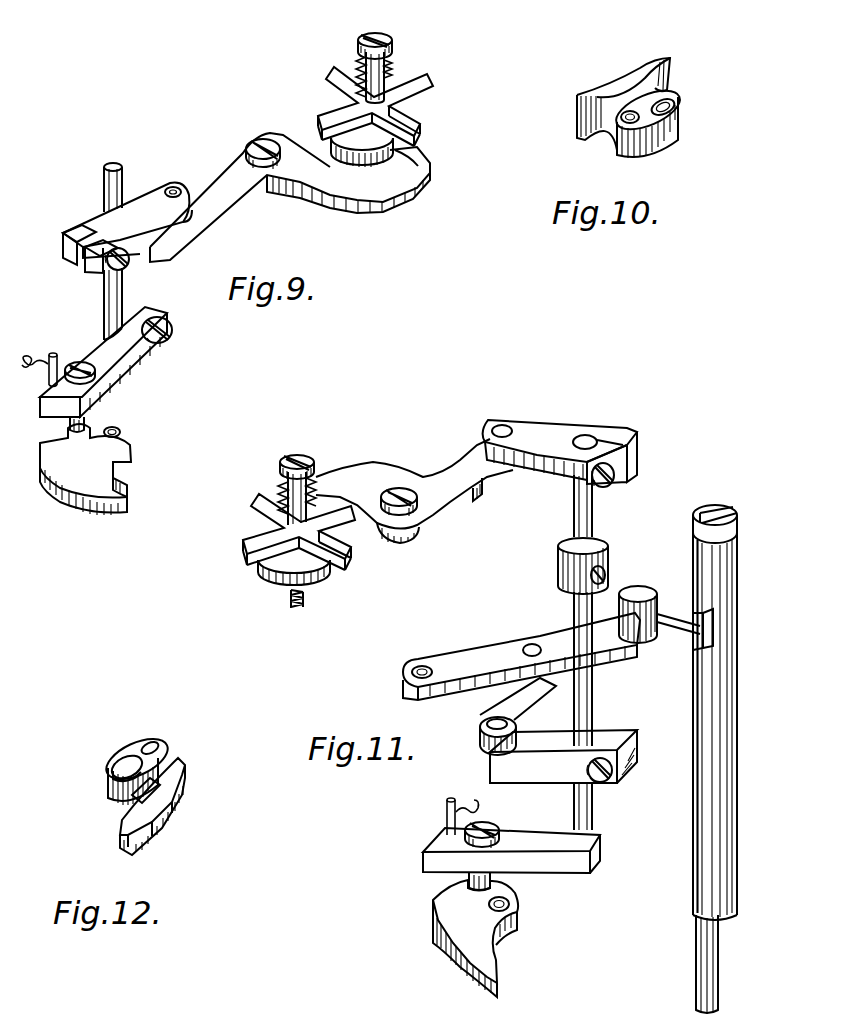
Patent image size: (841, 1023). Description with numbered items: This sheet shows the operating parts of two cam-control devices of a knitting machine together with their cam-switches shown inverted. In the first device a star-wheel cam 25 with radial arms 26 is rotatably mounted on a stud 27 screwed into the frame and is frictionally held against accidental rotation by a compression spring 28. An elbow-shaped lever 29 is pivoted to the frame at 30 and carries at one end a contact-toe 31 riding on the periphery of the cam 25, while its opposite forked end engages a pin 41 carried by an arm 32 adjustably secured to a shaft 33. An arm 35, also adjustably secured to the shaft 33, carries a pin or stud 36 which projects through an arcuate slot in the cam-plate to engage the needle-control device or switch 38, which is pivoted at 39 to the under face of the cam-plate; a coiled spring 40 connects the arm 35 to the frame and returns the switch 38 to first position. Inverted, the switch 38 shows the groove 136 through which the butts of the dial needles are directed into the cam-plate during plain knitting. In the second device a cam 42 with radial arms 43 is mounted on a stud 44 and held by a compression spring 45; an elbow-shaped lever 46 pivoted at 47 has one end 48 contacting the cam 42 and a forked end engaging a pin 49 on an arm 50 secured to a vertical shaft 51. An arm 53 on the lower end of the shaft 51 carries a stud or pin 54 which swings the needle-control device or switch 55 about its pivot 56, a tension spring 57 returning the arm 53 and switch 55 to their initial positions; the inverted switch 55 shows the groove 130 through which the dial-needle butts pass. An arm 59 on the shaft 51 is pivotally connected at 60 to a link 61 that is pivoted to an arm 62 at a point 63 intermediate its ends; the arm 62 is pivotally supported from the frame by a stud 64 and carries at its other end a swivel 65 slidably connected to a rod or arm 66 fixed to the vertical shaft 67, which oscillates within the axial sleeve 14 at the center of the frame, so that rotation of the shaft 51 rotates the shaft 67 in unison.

In FIG. 11, the axial sleeve 14 is at (722, 698).
In FIG. 9, the cam 25 is at (362, 109).
In FIG. 9, the radial arms 26 is at (335, 104).
In FIG. 9, the stud 27 is at (393, 44).
In FIG. 9, the compression spring 28 is at (388, 82).
In FIG. 9, the elbow-shaped lever 29 is at (357, 182).
In FIG. 9, the pivot 30 is at (260, 140).
In FIG. 9, the contact-toe 31 is at (392, 136).
In FIG. 9, the arm 32 is at (127, 221).
In FIG. 9, the shaft 33 is at (110, 193).
In FIG. 9, the arm 35 is at (120, 360).
In FIG. 9, the pin or stud 36 is at (88, 418).
In FIG. 10, the pin or stud 36 is at (631, 122).
In FIG. 9, the needle-control device or switch 38 is at (85, 469).
In FIG. 10, the needle-control device or switch 38 is at (585, 128).
In FIG. 9, the pivot 39 is at (121, 432).
In FIG. 10, the pivot 39 is at (681, 112).
In FIG. 9, the coiled spring 40 is at (38, 358).
In FIG. 9, the pin 41 is at (176, 186).
In FIG. 11, the cam 42 is at (276, 588).
In FIG. 11, the radial arms 43 is at (250, 556).
In FIG. 11, the stud 44 is at (310, 464).
In FIG. 11, the compression spring 45 is at (332, 508).
In FIG. 11, the elbow-shaped lever 46 is at (382, 494).
In FIG. 11, the pivot 47 is at (417, 504).
In FIG. 11, the end 48 is at (262, 516).
In FIG. 11, the pin 49 is at (504, 425).
In FIG. 11, the arm 50 is at (560, 453).
In FIG. 11, the vertical shaft 51 is at (581, 440).
In FIG. 11, the arm 53 is at (511, 847).
In FIG. 11, the stud or pin 54 is at (462, 880).
In FIG. 12, the stud or pin 54 is at (165, 737).
In FIG. 11, the needle-control device or switch 55 is at (475, 938).
In FIG. 12, the needle-control device or switch 55 is at (165, 815).
In FIG. 11, the pivot 56 is at (510, 904).
In FIG. 12, the pivot 56 is at (120, 758).
In FIG. 11, the tension spring 57 is at (470, 805).
In FIG. 11, the arm 59 is at (563, 756).
In FIG. 11, the pivot 60 is at (488, 727).
In FIG. 11, the link 61 is at (518, 716).
In FIG. 11, the arm 62 is at (521, 656).
In FIG. 11, the point 63 is at (533, 644).
In FIG. 11, the stud 64 is at (425, 668).
In FIG. 11, the swivel 65 is at (636, 590).
In FIG. 11, the rod or arm 66 is at (672, 614).
In FIG. 11, the vertical shaft 67 is at (698, 634).
In FIG. 12, the groove 130 is at (184, 787).
In FIG. 10, the groove 136 is at (632, 90).